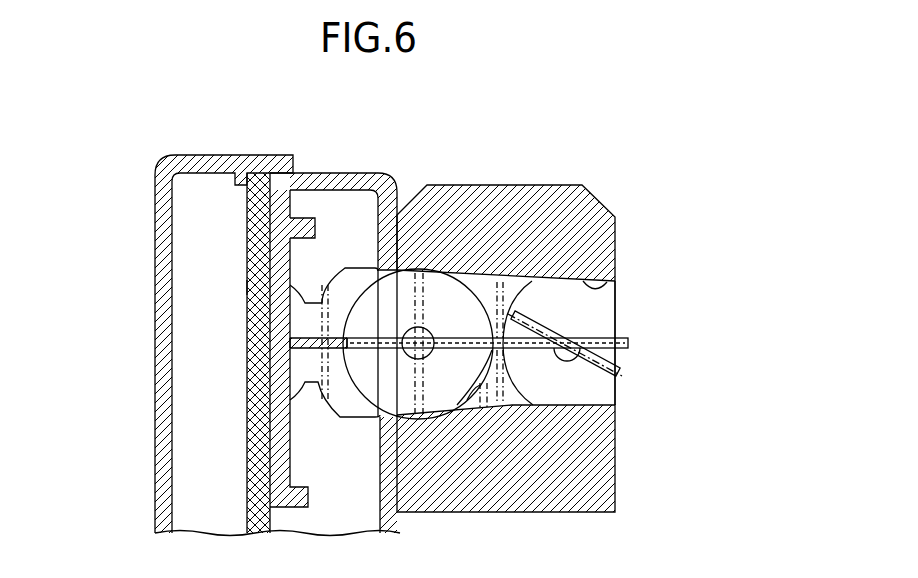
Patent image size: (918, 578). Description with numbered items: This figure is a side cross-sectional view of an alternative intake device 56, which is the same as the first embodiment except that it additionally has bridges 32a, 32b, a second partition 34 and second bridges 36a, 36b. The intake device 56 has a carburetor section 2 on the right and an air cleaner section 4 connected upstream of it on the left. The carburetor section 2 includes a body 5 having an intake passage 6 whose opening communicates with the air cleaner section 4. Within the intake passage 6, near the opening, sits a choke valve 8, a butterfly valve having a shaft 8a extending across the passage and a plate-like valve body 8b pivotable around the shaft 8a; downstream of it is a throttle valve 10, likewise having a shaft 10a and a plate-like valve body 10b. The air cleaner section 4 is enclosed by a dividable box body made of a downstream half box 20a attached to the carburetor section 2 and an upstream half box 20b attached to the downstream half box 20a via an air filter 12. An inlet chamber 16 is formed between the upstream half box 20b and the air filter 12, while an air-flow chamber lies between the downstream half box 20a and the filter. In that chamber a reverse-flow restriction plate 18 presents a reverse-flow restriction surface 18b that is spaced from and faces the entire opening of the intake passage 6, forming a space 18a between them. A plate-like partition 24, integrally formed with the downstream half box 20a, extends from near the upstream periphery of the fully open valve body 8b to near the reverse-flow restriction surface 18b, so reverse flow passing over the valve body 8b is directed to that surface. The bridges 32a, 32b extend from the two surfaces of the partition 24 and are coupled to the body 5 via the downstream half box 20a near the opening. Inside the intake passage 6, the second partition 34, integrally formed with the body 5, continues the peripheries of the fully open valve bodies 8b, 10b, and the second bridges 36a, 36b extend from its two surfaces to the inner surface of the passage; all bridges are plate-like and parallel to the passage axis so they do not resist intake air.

The carburetor section 2 is at (522, 150).
The air cleaner section 4 is at (305, 152).
The body 5 is at (603, 220).
The intake passage 6 is at (613, 282).
The choke valve 8 is at (440, 318).
The shaft 8a is at (470, 370).
The valve body 8b is at (478, 348).
The throttle valve 10 is at (556, 308).
The shaft 10a is at (567, 361).
The valve body 10b is at (628, 343).
The air filter 12 is at (247, 197).
The inlet chamber 16 is at (193, 490).
The reverse-flow restriction plate 18 is at (277, 413).
The space 18a is at (360, 458).
The reverse-flow restriction surface 18b is at (290, 268).
The downstream half box 20a is at (340, 173).
The upstream half box 20b is at (155, 176).
The partition 24 is at (307, 350).
The bridge 32a is at (247, 287).
The bridge 32b is at (335, 405).
The second partition 34 is at (502, 347).
The second bridge 36a is at (534, 280).
The second bridge 36b is at (468, 405).
The intake device 56 is at (687, 198).